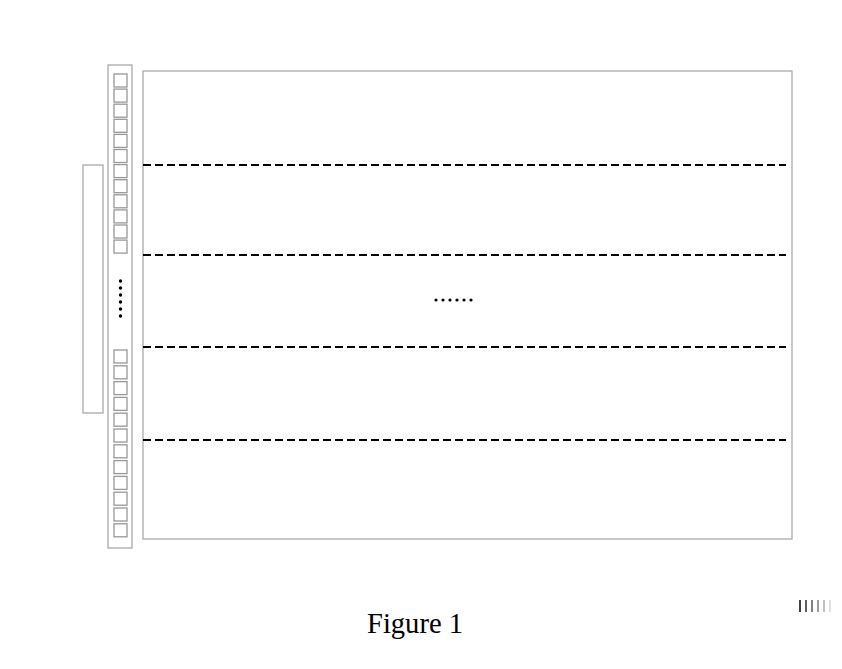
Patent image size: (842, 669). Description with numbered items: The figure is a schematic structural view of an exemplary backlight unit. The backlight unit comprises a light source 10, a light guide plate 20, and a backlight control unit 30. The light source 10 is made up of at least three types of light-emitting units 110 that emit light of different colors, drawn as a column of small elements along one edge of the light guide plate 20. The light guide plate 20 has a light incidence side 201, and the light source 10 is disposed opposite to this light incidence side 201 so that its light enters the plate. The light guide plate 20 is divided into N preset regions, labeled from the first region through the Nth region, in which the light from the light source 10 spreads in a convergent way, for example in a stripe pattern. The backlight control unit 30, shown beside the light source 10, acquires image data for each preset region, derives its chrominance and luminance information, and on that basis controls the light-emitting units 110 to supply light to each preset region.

The light source 10 is at (88, 283).
The light-emitting units 110 is at (132, 78).
The light incidence side 201 is at (119, 80).
The light guide plate 20 is at (327, 94).
The backlight control unit 30 is at (83, 290).